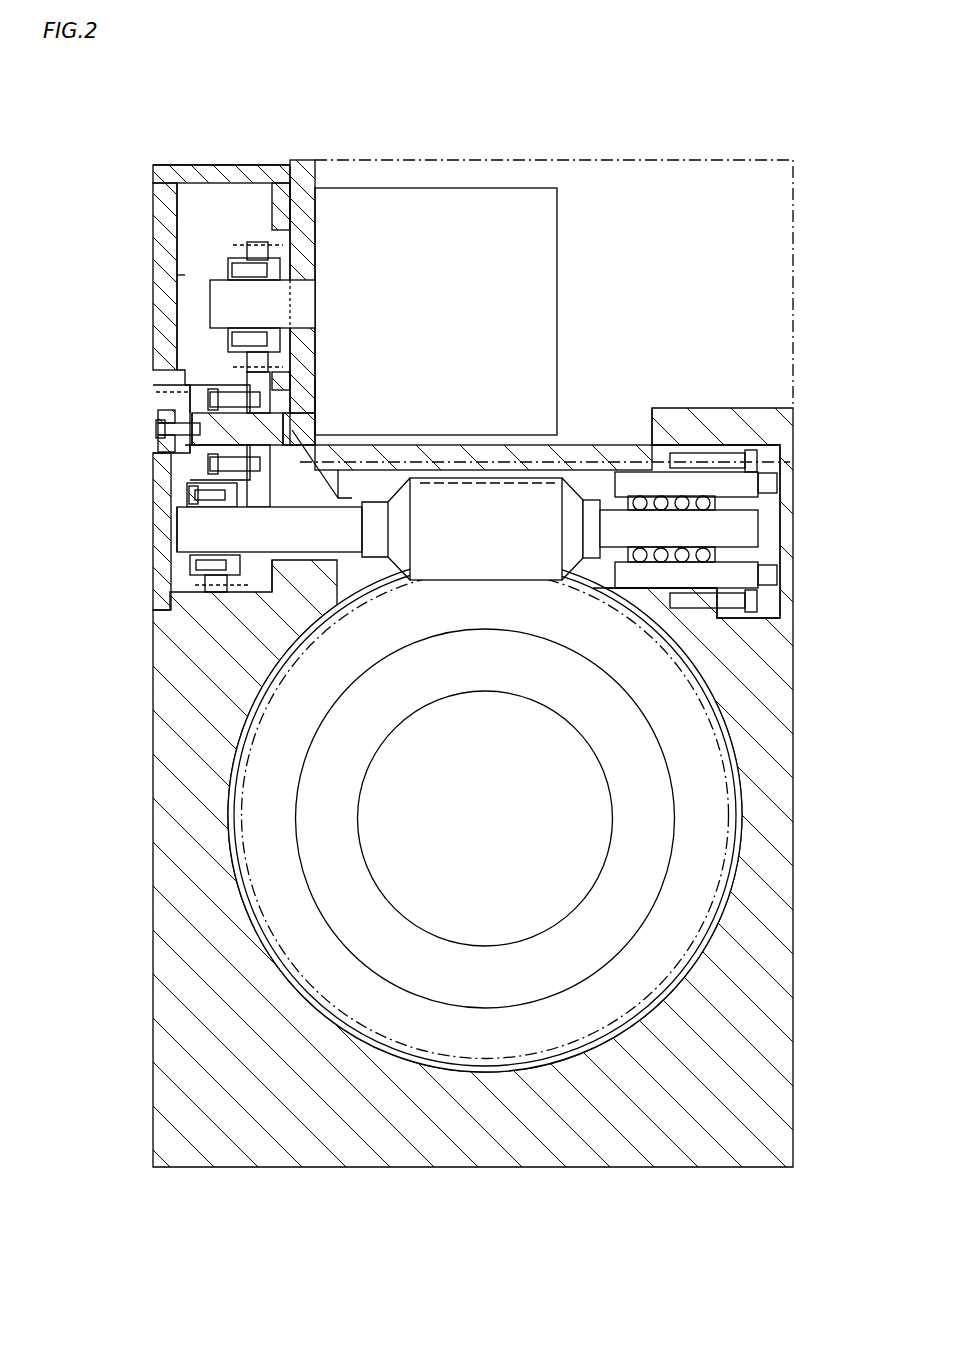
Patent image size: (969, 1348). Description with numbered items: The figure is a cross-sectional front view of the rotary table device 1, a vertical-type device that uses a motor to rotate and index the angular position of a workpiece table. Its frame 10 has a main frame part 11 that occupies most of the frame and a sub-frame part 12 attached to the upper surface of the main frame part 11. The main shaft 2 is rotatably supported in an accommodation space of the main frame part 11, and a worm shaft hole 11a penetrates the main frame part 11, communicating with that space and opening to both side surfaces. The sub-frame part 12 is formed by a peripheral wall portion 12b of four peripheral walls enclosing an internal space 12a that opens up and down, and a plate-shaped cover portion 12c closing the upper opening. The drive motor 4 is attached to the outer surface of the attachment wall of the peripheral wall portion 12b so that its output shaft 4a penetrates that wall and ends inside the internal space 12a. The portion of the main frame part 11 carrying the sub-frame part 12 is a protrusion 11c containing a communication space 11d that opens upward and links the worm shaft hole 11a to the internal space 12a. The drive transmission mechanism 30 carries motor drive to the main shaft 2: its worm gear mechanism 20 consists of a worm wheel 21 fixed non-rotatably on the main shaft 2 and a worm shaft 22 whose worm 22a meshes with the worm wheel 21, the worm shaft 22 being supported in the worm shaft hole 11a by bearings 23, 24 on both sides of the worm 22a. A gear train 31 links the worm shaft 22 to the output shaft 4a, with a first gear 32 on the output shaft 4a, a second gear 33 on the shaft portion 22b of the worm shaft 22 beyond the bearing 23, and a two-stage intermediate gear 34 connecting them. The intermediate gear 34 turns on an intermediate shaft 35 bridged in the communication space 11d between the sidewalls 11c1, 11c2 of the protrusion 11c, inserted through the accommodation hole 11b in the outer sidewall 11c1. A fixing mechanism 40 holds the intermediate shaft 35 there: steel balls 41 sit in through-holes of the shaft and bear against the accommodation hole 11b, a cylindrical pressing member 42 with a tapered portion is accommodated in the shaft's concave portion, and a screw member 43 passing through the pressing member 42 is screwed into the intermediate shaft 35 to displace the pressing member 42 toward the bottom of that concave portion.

The rotary table device 1 is at (783, 95).
The main shaft 2 is at (640, 830).
The drive motor 4 is at (452, 183).
The output shaft 4a is at (228, 295).
The frame 10 is at (148, 1210).
The main frame part 11 is at (153, 1020).
The worm shaft hole 11a is at (545, 462).
The through-hole (accommodation hole) 11b is at (152, 455).
The protrusion 11c is at (150, 392).
The outer sidewall 11c1 is at (225, 385).
The inner sidewall 11c2 is at (315, 405).
The communication space 11d is at (315, 388).
The sub-frame part 12 is at (302, 152).
The internal space 12a is at (262, 198).
The peripheral wall portion 12b is at (157, 212).
The cover portion 12c is at (257, 200).
The worm gear mechanism 20 is at (825, 203).
The worm wheel 21 is at (667, 947).
The worm shaft 22 is at (590, 490).
The worm 22a is at (511, 577).
The shaft portion 22b is at (185, 513).
The bearing 23 is at (290, 555).
The bearing 24 is at (712, 568).
The drive transmission mechanism 30 is at (103, 153).
The gear train 31 is at (92, 207).
The first gear 32 is at (250, 270).
The second gear 33 is at (193, 565).
The intermediate gear 34 is at (170, 275).
The intermediate shaft 35 is at (155, 458).
The fixing mechanism 40 is at (93, 340).
The steel ball 41 is at (175, 407).
The pressing member 42 is at (165, 413).
The screw member 43 is at (160, 438).